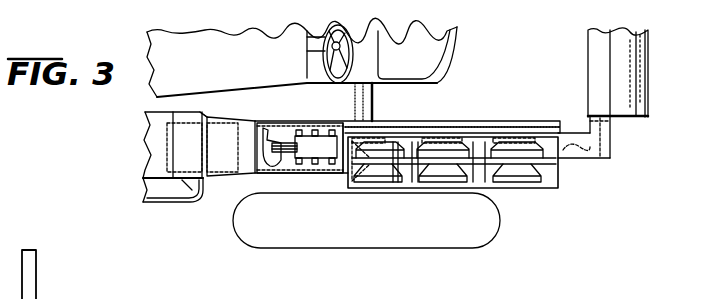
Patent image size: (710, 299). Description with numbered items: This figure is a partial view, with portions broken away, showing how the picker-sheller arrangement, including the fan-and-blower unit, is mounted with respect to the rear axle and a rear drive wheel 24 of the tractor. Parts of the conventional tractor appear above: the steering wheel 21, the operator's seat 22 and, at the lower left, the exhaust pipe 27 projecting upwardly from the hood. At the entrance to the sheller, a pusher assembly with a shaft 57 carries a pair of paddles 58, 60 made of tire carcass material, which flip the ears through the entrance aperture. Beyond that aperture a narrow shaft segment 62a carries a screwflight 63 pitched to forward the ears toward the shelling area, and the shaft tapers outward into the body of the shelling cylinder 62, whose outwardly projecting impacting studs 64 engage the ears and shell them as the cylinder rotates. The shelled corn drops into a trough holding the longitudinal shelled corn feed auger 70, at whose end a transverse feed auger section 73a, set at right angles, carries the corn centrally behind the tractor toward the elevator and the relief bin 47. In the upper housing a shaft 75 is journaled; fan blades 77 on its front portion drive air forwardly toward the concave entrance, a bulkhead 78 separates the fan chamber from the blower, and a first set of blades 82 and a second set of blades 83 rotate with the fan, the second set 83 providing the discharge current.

The steering wheel 21 is at (340, 45).
The seat 22 is at (448, 61).
The rear drive wheel 24 is at (488, 244).
The exhaust pipe 27 is at (37, 278).
The relief bin 47 is at (630, 75).
The shaft 57 is at (205, 116).
The paddle 58 is at (170, 144).
The paddle 60 is at (218, 158).
The shelling cylinder 62 is at (325, 131).
The narrow shaft segment 62a is at (280, 143).
The screwflight 63 is at (265, 127).
The impacting studs 64 is at (330, 165).
The longitudinal shelled corn feed auger 70 is at (582, 160).
The transverse feed auger section 73a is at (613, 127).
The shaft 75 is at (402, 175).
The fan blades 77 is at (376, 190).
The bulkhead 78 is at (395, 187).
The first set of blades 82 is at (440, 190).
The second set of blades 83 is at (513, 188).